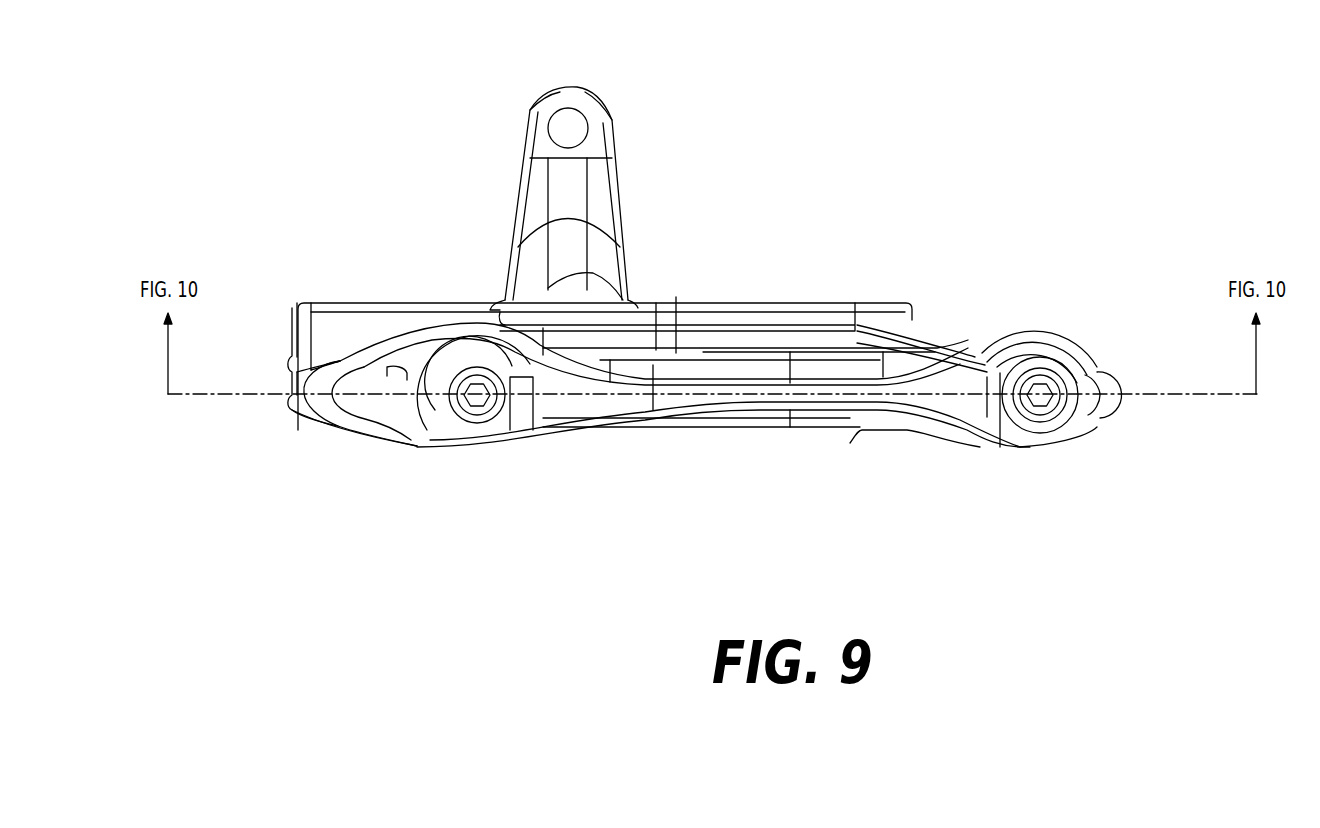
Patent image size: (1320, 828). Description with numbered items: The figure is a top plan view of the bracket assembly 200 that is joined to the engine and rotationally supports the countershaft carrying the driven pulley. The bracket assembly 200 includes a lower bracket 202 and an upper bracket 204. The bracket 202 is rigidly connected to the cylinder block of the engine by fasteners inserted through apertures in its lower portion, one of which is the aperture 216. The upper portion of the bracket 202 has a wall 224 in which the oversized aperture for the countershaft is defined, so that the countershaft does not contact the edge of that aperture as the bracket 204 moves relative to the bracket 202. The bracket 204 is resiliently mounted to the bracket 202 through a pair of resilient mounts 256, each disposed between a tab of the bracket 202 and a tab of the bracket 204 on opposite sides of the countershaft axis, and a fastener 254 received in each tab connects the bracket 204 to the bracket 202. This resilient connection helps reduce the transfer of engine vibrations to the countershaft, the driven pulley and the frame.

The bracket assembly 200 is at (886, 216).
The bracket 202 is at (579, 196).
The aperture 216 is at (575, 130).
The wall 224 is at (760, 303).
The bracket 204 is at (600, 413).
The fastener 254 is at (460, 420).
The resilient mount 256 is at (374, 405).